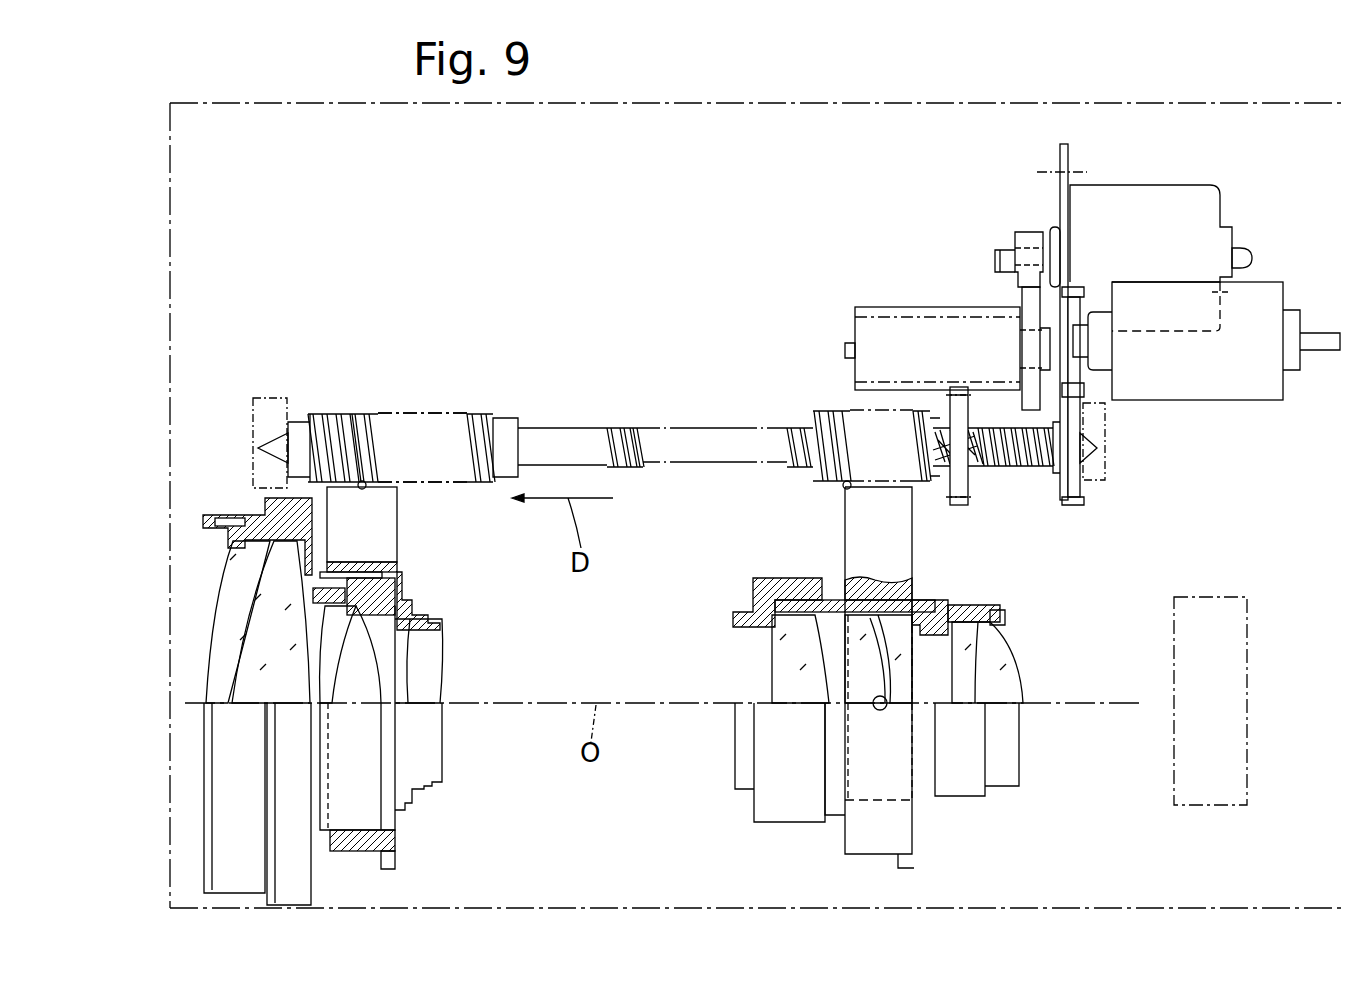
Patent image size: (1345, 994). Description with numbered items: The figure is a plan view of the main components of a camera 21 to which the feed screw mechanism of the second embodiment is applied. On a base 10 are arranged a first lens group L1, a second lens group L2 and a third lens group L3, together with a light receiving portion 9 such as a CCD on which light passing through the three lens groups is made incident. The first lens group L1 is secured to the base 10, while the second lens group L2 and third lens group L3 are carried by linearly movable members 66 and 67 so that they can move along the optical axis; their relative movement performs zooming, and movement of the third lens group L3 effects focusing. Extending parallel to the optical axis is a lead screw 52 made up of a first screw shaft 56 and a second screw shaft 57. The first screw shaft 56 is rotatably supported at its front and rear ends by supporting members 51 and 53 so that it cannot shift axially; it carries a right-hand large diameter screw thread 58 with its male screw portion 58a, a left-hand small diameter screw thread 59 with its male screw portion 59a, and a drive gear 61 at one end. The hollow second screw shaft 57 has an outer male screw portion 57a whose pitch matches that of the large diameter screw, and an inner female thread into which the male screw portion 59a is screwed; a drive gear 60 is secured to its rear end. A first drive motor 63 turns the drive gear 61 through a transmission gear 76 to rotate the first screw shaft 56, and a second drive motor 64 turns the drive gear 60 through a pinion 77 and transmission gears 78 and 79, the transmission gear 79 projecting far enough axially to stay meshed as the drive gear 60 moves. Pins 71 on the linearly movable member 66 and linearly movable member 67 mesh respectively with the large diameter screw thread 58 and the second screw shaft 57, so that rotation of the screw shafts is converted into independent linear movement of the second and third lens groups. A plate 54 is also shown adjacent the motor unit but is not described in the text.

The light receiving portion 9 is at (1240, 600).
The base 10 is at (724, 114).
The camera 21 is at (1205, 282).
The supporting member 51 is at (266, 397).
The lead screw 52 is at (636, 327).
The supporting member 53 is at (1105, 470).
The mounting plate 54 is at (1059, 157).
The first screw shaft 56 is at (552, 428).
The second screw shaft 57 is at (824, 425).
The male screw portion 57a is at (830, 413).
The large diameter screw thread 58 is at (330, 414).
The male screw portion 58a is at (364, 414).
The small diameter screw thread 59 is at (618, 427).
The male screw portion 59a is at (641, 427).
The drive gear 60 is at (964, 486).
The drive gear 61 is at (1081, 481).
The first drive motor 63 is at (1187, 392).
The second drive motor 64 is at (1171, 185).
The linearly movable member 66 is at (397, 545).
The linearly movable member 67 is at (844, 549).
The pin 71 is at (366, 489).
The transmission gear 76 is at (1088, 374).
The pinion 77 is at (1022, 241).
The transmission gear 78 is at (1030, 302).
The transmission gear 79 is at (892, 326).
The first lens group L1 is at (318, 873).
The second lens group L2 is at (404, 863).
The third lens group L3 is at (921, 851).